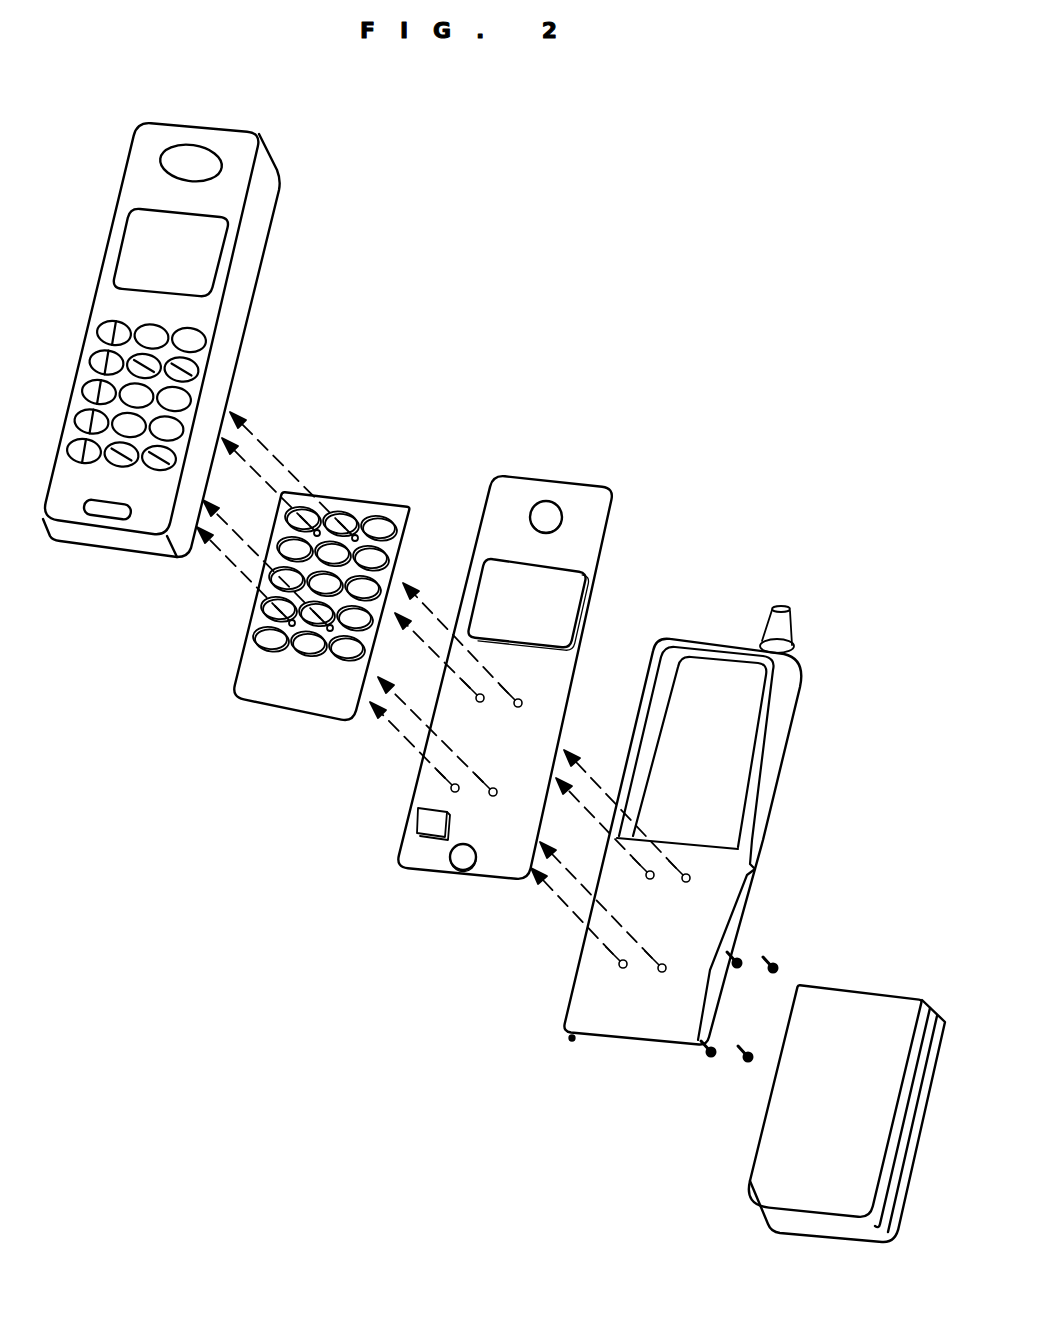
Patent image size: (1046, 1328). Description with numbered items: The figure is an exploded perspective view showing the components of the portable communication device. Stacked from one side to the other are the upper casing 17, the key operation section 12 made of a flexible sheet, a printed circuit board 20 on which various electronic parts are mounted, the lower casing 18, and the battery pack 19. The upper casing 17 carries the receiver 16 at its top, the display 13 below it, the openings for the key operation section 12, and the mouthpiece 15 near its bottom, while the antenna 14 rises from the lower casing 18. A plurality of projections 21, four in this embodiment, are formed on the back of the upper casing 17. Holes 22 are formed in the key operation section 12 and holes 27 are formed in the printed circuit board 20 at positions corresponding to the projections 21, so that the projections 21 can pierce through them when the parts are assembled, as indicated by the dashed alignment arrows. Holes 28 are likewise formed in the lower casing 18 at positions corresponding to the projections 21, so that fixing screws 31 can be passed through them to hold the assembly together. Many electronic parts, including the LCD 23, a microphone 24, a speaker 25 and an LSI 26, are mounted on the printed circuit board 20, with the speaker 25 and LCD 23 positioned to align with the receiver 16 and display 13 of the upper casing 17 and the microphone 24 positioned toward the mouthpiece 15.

The key operation section 12 is at (293, 693).
The display 13 is at (195, 272).
The antenna 14 is at (778, 618).
The mouthpiece 15 is at (107, 510).
The receiver 16 is at (200, 167).
The upper casing 17 is at (260, 225).
The lower casing 18 is at (584, 982).
The battery pack 19 is at (793, 1147).
The printed circuit board 20 is at (590, 525).
The projections 21 is at (163, 448).
The holes 22 is at (333, 515).
The LCD 23 is at (565, 608).
The microphone 24 is at (460, 858).
The speaker 25 is at (544, 517).
The LSI 26 is at (427, 832).
The holes 27 is at (478, 699).
The holes 28 is at (651, 873).
The fixing screws 31 is at (738, 962).